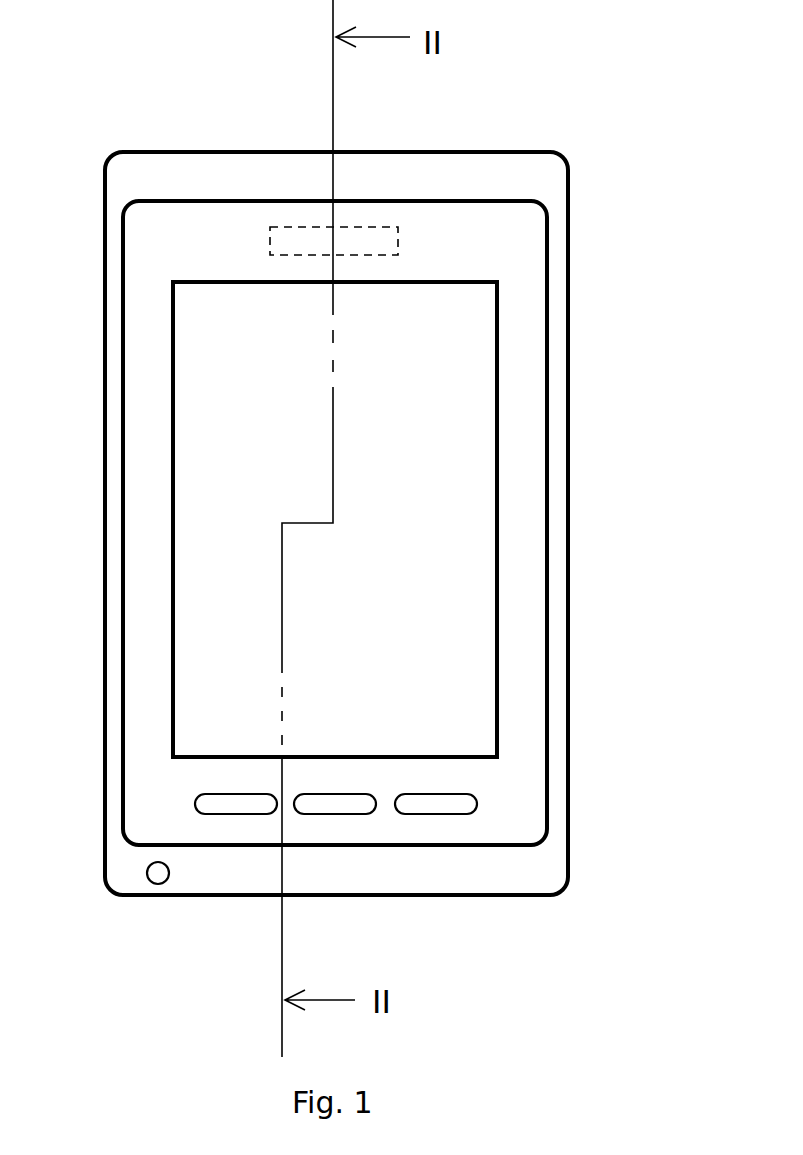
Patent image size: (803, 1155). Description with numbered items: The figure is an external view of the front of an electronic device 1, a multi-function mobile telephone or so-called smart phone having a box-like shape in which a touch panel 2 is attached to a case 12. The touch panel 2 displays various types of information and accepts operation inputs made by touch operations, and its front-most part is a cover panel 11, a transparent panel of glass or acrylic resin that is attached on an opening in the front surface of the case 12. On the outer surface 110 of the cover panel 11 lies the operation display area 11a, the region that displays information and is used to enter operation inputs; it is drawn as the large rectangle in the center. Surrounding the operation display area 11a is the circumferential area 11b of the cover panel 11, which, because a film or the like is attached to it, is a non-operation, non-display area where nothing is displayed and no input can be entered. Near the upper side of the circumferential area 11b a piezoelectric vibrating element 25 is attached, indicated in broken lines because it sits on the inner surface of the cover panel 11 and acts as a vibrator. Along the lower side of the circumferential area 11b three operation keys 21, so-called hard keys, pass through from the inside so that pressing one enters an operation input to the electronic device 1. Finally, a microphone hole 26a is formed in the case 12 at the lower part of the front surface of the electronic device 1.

The electronic device 1 is at (517, 132).
The touch panel 2 is at (460, 357).
The cover panel 11 is at (537, 388).
The outer surface 110 is at (530, 530).
The operation display area 11a is at (470, 615).
The circumferential area 11b is at (522, 688).
The case 12 is at (538, 873).
The operation key 21 is at (244, 804).
The piezoelectric vibrating element 25 is at (292, 225).
The microphone hole 26a is at (158, 885).